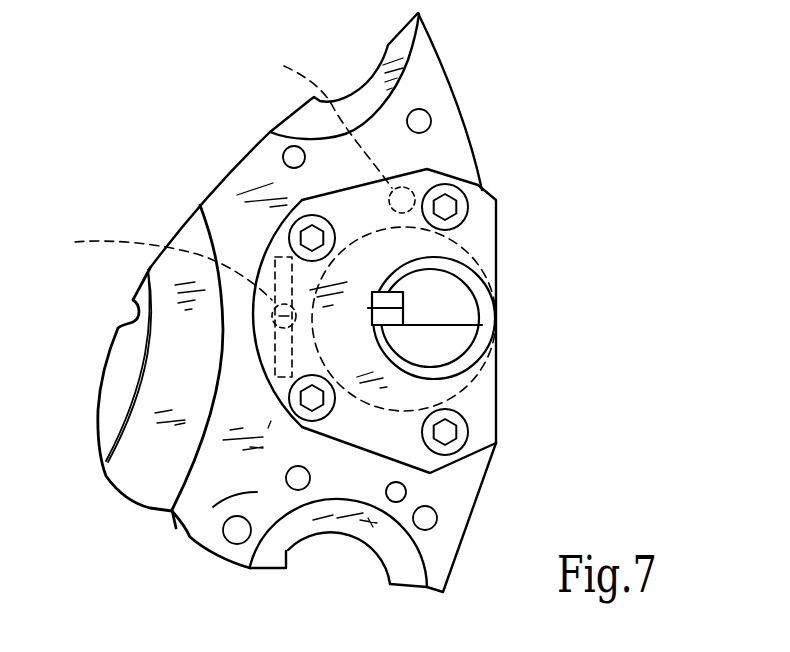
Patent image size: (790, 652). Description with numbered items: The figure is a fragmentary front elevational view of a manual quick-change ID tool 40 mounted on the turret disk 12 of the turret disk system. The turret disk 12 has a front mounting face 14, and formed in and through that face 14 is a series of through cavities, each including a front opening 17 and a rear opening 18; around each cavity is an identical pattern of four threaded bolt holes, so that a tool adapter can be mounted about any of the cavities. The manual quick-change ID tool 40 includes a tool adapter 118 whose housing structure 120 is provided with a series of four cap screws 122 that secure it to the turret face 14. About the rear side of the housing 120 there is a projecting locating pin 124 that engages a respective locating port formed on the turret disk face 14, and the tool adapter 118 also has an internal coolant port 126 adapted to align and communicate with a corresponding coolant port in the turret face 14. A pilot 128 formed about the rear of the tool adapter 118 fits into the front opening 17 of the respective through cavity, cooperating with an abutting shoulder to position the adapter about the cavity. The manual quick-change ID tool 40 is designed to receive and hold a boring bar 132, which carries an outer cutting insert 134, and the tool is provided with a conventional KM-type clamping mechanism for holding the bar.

The turret disk 12 is at (437, 48).
The front mounting face 14 is at (280, 420).
The front opening 17 is at (368, 542).
The rear opening 18 is at (298, 549).
The manual quick-change ID tool 40 is at (620, 393).
The tool adapter 118 is at (521, 218).
The housing structure 120 is at (480, 427).
The cap screws 122 is at (312, 238).
The locating pin 124 is at (148, 263).
The internal coolant port 126 is at (325, 127).
The pilot 128 is at (465, 386).
The boring bar 132 is at (448, 303).
The outer cutting insert 134 is at (370, 309).